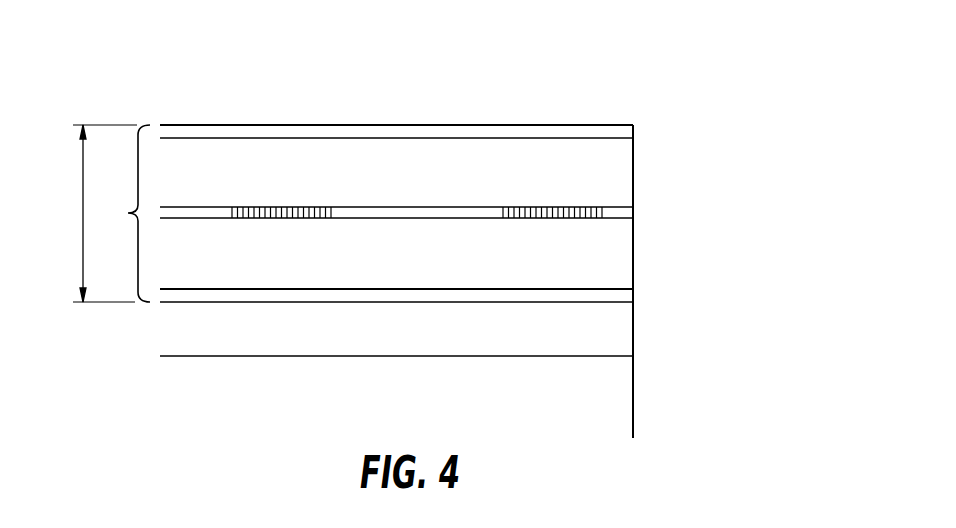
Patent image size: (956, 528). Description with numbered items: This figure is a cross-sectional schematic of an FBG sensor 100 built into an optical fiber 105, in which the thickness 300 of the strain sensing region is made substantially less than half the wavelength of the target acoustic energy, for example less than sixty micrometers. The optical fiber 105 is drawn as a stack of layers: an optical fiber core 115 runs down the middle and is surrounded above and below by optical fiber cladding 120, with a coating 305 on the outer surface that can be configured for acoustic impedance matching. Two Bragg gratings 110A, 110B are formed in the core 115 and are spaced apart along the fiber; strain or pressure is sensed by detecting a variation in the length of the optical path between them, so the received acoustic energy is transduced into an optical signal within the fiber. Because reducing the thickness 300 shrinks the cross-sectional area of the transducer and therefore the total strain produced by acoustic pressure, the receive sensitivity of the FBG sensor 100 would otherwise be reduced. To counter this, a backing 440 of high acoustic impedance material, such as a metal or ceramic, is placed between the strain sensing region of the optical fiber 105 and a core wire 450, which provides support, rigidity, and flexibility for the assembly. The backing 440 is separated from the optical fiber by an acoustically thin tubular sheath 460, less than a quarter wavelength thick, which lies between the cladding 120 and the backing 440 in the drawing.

The FBG sensor 100 is at (152, 49).
The coating 305 is at (390, 124).
The optical fiber cladding 120 is at (633, 176).
The optical fiber core 115 is at (633, 216).
The Bragg grating 110A is at (272, 205).
The Bragg grating 110B is at (548, 205).
The tubular sheath 460 is at (633, 298).
The backing 440 is at (633, 334).
The core wire 450 is at (633, 402).
The thickness of the strain sensing region 300 is at (82, 213).
The optical fiber 105 is at (120, 213).